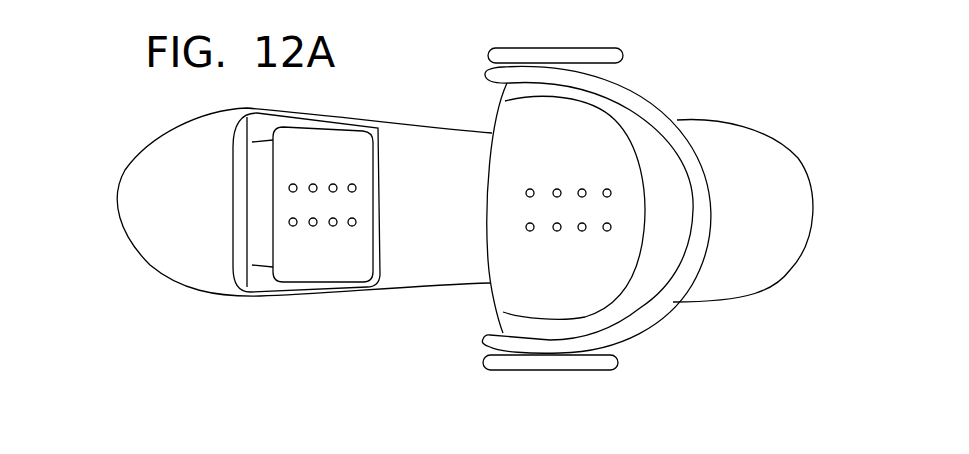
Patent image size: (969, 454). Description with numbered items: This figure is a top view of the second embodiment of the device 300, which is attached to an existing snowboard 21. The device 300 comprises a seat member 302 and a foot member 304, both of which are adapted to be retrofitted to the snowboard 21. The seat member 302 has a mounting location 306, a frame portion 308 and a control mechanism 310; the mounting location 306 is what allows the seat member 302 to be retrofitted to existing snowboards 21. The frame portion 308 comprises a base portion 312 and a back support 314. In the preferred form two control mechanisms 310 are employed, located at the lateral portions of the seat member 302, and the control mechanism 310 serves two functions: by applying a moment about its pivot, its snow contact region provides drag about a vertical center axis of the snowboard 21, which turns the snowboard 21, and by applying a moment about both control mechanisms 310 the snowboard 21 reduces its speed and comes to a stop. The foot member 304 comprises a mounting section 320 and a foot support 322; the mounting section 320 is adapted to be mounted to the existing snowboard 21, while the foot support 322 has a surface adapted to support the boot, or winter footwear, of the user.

The device 300 is at (140, 119).
The snowboard 21 is at (740, 142).
The seat member 302 is at (592, 135).
The base portion 312 is at (507, 290).
The mounting location 306 is at (525, 208).
The frame portion 308 is at (663, 308).
The back support 314 is at (663, 262).
The control mechanism 310 is at (592, 55).
The foot support 322 is at (257, 243).
The foot member 304 is at (262, 270).
The mounting section 320 is at (340, 229).